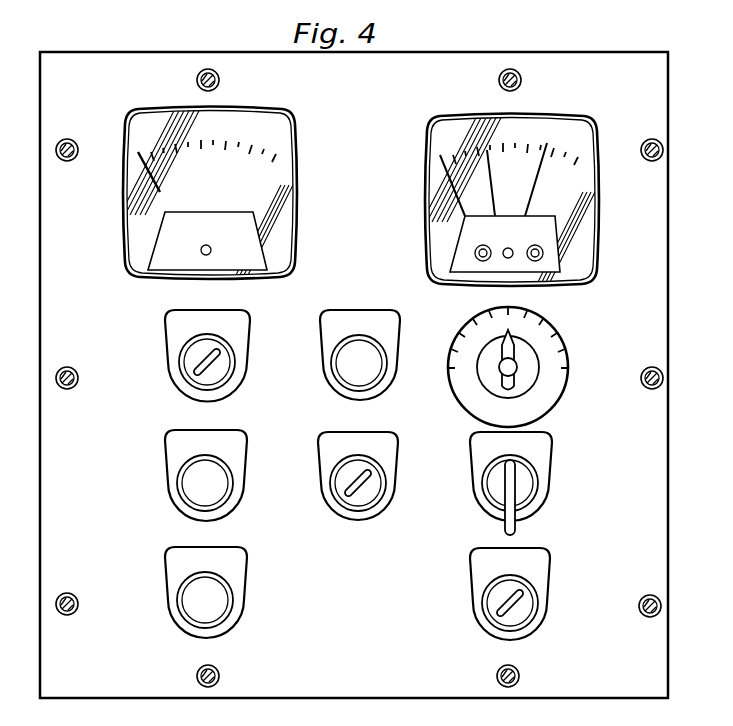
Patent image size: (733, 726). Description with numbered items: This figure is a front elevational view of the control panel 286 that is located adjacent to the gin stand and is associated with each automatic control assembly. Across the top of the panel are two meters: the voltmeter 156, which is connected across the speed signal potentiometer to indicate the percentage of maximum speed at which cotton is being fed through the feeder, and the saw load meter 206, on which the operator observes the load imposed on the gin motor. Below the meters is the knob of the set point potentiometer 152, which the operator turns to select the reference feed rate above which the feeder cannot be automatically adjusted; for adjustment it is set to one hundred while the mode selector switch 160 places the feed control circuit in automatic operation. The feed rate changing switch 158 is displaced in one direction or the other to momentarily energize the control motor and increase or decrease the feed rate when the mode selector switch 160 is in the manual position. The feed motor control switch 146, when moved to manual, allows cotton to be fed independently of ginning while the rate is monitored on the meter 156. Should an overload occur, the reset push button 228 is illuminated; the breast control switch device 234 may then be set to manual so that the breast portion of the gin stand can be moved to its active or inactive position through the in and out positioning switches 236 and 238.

The control panel 286 is at (466, 72).
The voltmeter 156 is at (312, 146).
The saw load meter 206 is at (599, 159).
The feed motor control switch 146 is at (158, 358).
The reset push button 228 is at (347, 304).
The set point potentiometer 152 is at (574, 340).
The in positioning switch 236 is at (161, 462).
The breast control switch device 234 is at (400, 470).
The feed rate changing switch 158 is at (554, 470).
The out positioning switch 238 is at (249, 598).
The mode selector switch 160 is at (549, 600).